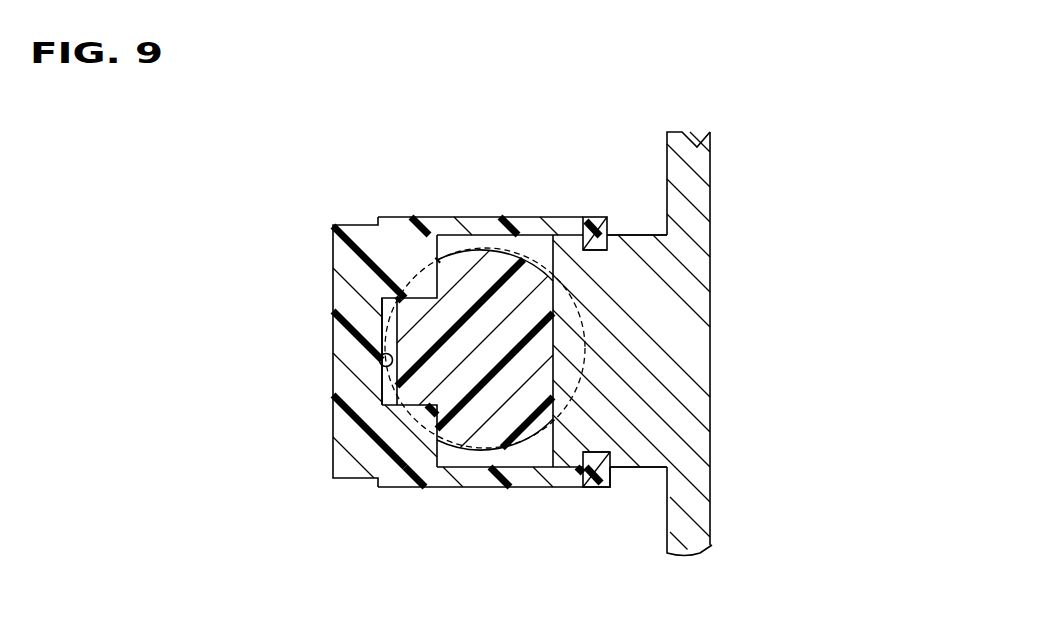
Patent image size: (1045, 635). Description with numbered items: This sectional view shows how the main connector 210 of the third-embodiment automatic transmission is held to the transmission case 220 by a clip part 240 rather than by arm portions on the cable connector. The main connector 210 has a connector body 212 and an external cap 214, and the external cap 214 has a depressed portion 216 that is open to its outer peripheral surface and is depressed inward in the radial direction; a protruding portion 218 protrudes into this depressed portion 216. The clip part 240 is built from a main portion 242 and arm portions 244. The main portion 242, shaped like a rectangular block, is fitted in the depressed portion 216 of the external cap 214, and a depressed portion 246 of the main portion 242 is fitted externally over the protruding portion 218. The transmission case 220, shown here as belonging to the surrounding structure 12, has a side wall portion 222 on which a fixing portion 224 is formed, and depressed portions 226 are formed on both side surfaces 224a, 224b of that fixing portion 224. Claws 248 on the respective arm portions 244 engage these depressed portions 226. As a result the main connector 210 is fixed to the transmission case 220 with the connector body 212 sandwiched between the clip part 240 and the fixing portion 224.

The frame 12 is at (700, 278).
The main connector 210 is at (596, 348).
The connector body 212 is at (604, 336).
The external cap 214 is at (490, 258).
The depressed portion 216 is at (430, 447).
The protruding portion 218 is at (403, 328).
The transmission case 220 is at (698, 132).
The side wall portion 222 is at (703, 517).
The fixing portion 224 is at (580, 425).
The side surface 224a is at (653, 467).
The side surface 224b is at (643, 235).
The depressed portions 226 is at (600, 240).
The clip part 240 is at (336, 212).
The main portion 242 is at (343, 430).
The arm portions 244 is at (530, 225).
The depressed portion 246 is at (380, 368).
The claws 248 is at (590, 225).